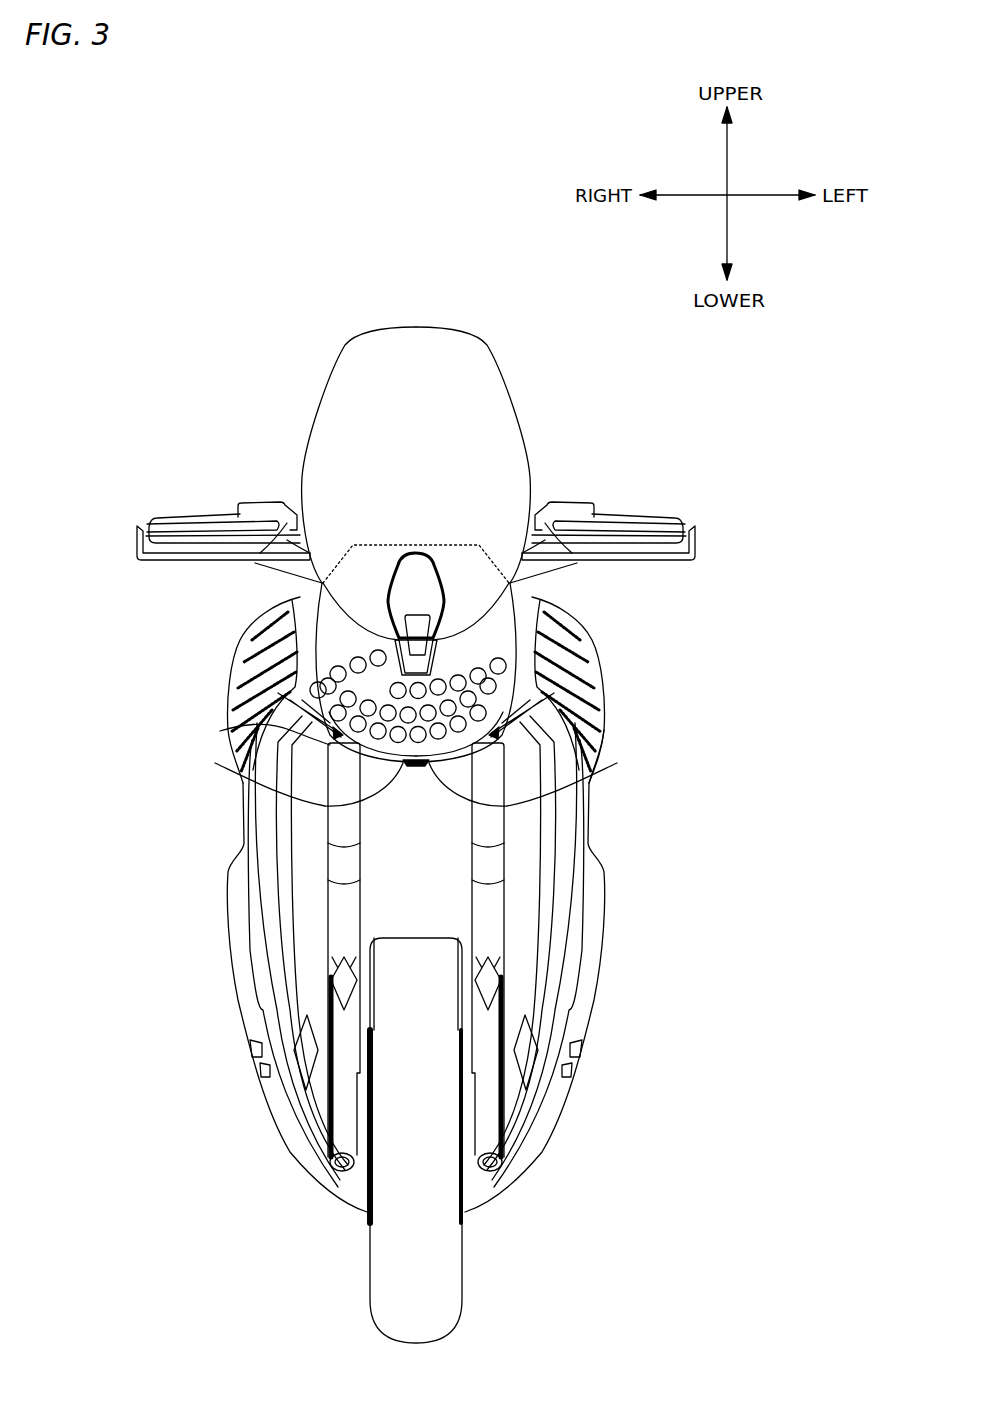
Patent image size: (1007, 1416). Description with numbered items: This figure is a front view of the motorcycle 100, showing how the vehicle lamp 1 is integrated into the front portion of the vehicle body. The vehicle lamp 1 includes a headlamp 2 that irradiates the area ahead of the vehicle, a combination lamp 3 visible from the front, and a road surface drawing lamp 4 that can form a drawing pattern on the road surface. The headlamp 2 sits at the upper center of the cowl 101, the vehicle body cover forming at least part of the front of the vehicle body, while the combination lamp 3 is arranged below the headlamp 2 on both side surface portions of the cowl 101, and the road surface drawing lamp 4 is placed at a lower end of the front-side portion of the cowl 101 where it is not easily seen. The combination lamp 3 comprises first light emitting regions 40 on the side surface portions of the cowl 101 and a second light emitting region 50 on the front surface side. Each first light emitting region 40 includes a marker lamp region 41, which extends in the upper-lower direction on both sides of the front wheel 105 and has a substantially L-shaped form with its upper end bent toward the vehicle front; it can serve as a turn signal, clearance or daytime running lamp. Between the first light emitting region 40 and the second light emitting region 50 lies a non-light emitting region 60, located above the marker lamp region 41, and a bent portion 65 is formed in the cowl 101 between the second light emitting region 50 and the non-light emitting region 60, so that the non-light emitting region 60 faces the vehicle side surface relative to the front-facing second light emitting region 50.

The motorcycle 100 is at (238, 327).
The vehicle lamp 1 is at (92, 650).
The headlamp 2 is at (403, 593).
The combination lamp 3 is at (216, 688).
The road surface drawing lamp 4 is at (215, 763).
The first light emitting region 40 is at (228, 705).
The marker lamp region 41 is at (258, 827).
The second light emitting region 50 is at (261, 737).
The non-light emitting region 60 is at (290, 612).
The bent portion 65 is at (535, 675).
The cowl 101 is at (632, 744).
The front wheel 105 is at (388, 1277).